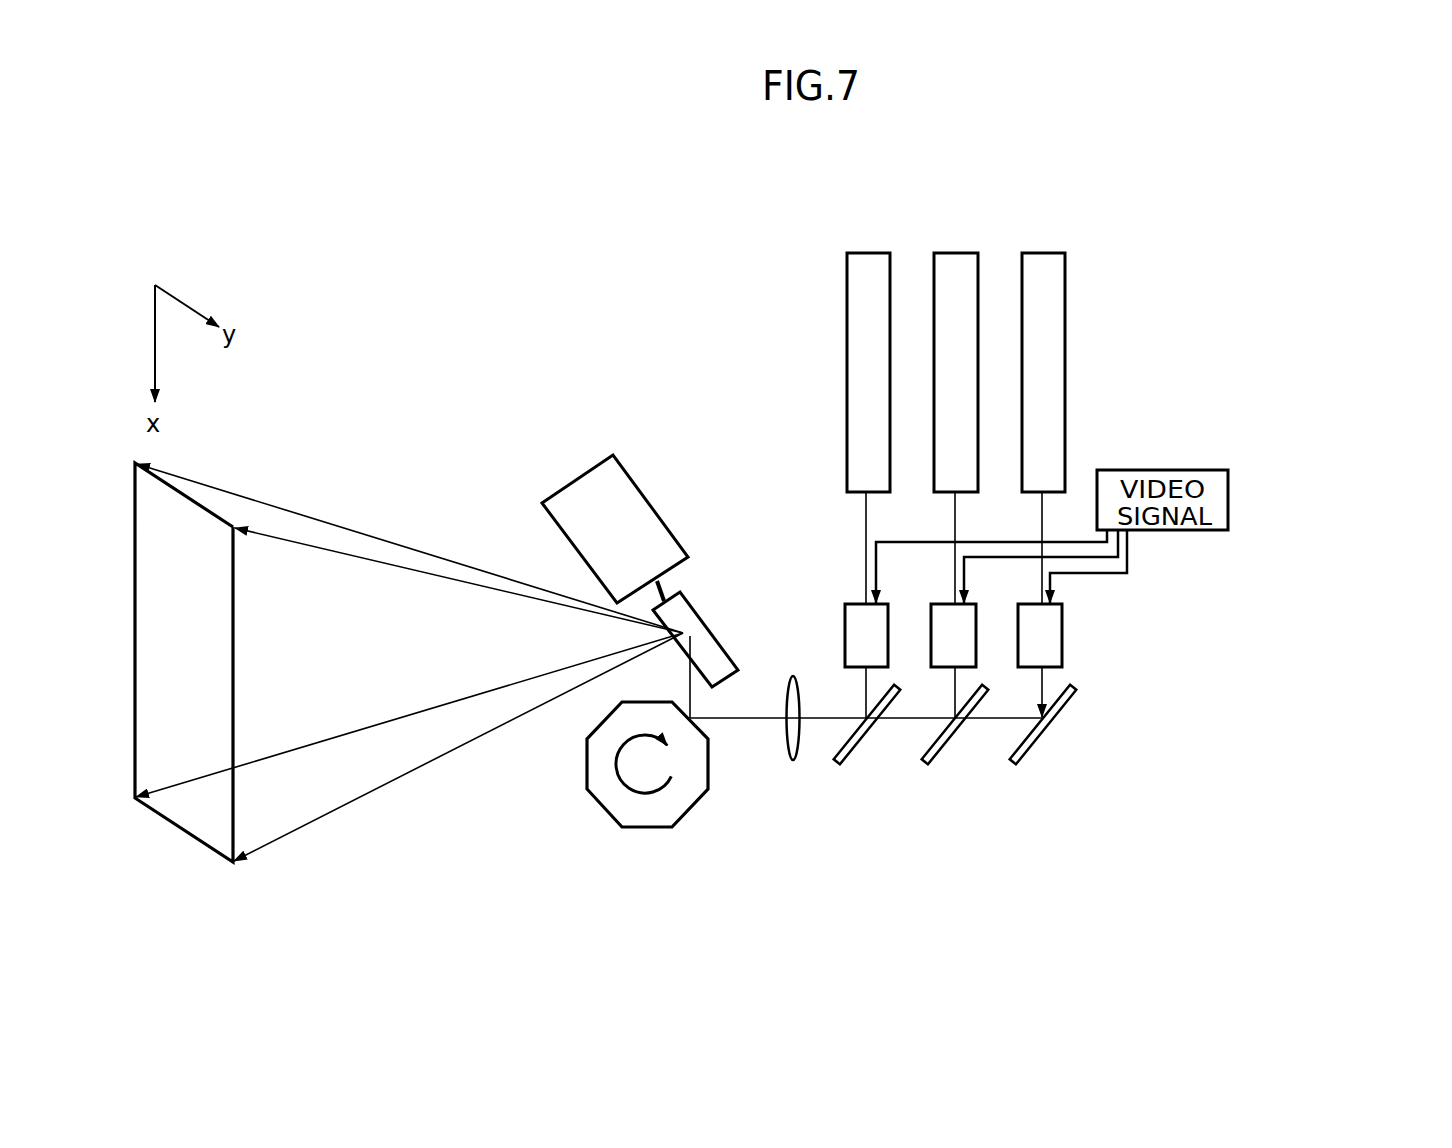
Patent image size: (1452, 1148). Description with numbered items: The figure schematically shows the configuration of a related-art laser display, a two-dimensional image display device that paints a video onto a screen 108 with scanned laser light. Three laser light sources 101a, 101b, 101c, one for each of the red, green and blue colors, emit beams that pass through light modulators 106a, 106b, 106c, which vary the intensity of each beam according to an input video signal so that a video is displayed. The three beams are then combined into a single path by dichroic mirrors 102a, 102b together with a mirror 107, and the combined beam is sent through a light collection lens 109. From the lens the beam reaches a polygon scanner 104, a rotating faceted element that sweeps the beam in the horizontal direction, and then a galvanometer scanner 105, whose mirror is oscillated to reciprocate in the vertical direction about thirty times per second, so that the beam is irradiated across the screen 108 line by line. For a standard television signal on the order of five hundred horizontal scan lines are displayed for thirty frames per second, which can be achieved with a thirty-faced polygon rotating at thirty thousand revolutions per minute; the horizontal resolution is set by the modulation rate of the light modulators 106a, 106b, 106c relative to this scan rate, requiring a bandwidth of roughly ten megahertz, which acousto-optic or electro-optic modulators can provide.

The laser light source 101a is at (1042, 262).
The laser light source 101b is at (960, 262).
The laser light source 101c is at (871, 260).
The dichroic mirror 102a is at (955, 735).
The dichroic mirror 102b is at (870, 735).
The polygon scanner 104 is at (607, 800).
The galvanometer scanner 105 is at (583, 489).
The light modulator 106a is at (1053, 618).
The light modulator 106b is at (970, 640).
The light modulator 106c is at (880, 647).
The mirror 107 is at (1050, 723).
The screen 108 is at (175, 506).
The light collection lens 109 is at (787, 733).